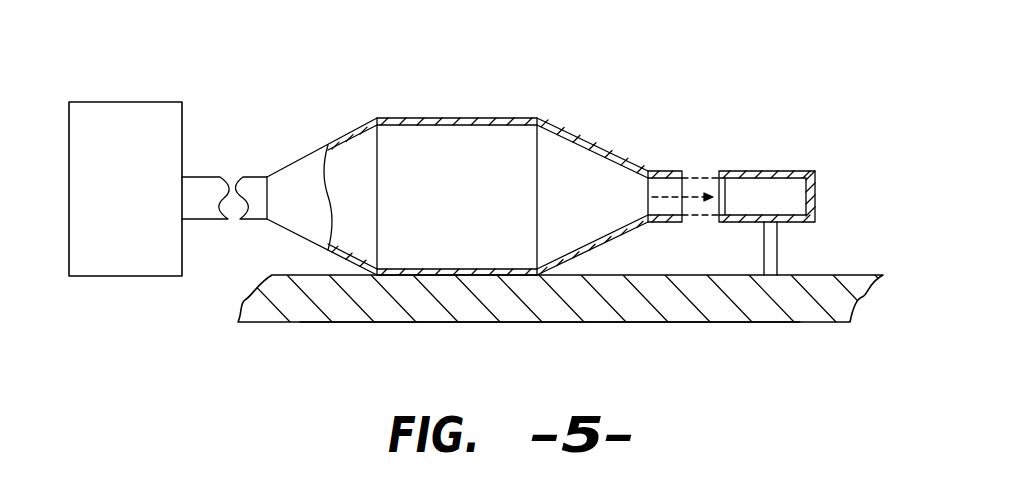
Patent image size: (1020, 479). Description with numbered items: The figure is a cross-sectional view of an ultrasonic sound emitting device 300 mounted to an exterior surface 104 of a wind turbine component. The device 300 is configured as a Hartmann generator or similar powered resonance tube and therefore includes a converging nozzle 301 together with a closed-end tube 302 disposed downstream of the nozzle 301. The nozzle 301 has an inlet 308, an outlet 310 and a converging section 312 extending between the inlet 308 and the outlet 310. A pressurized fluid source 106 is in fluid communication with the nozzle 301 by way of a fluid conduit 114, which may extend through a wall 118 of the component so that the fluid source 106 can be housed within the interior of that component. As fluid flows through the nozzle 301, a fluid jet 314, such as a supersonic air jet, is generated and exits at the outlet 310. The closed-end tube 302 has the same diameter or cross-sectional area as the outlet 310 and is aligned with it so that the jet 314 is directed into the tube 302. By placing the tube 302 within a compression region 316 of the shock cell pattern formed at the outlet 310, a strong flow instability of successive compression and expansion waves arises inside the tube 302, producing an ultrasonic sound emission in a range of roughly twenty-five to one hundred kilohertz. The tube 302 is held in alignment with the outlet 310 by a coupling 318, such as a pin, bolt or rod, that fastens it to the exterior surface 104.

The ultrasonic sound emitting device 300 is at (690, 68).
The converging nozzle 301 is at (443, 107).
The closed-end tube 302 is at (788, 171).
The inlet 308 is at (375, 137).
The outlet 310 is at (682, 172).
The converging section 312 is at (543, 108).
The fluid jet 314 is at (703, 178).
The compression region 316 is at (752, 231).
The coupling 318 is at (777, 242).
The exterior surface 104 is at (805, 275).
The pressurized fluid source 106 is at (142, 202).
The fluid conduit 114 is at (200, 190).
The wall 118 is at (755, 312).